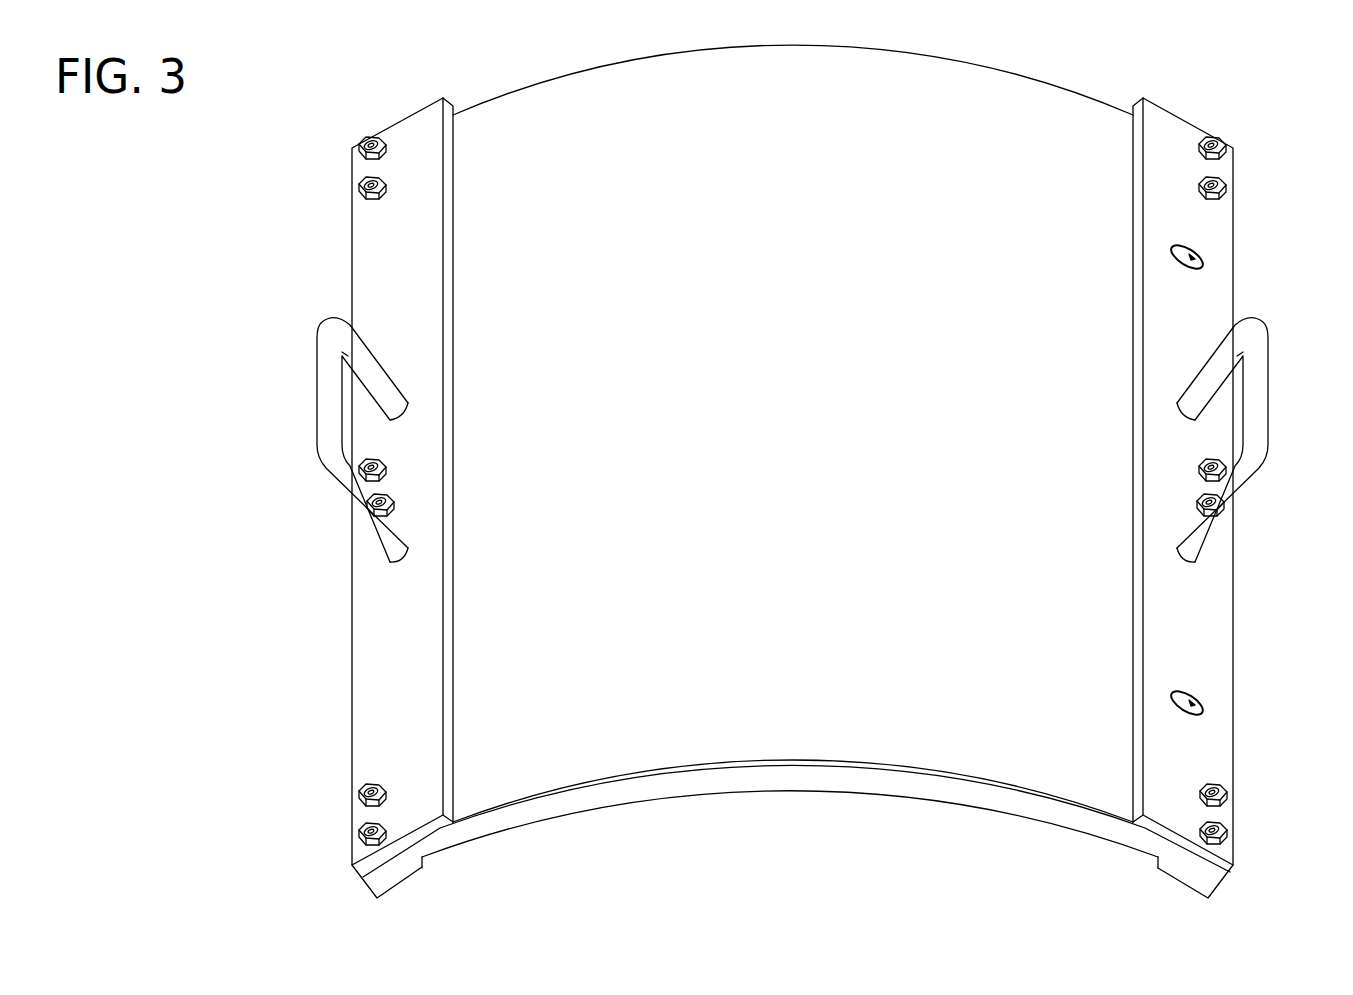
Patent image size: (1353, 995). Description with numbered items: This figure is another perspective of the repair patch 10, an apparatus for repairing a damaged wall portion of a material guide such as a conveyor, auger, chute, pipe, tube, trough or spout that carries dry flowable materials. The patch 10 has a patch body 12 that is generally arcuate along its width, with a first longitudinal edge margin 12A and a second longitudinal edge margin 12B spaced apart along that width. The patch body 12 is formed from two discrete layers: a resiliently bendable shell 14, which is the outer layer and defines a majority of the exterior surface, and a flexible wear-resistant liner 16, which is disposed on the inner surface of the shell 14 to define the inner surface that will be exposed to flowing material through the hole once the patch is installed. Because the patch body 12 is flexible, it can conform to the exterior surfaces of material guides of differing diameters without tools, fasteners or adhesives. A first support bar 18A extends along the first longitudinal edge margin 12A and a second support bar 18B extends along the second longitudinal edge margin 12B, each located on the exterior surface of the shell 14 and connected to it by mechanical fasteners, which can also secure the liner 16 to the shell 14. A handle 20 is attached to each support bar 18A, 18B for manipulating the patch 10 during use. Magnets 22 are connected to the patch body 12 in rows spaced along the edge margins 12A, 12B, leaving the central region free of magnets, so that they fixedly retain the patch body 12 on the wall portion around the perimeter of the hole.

The repair patch 10 is at (652, 915).
The patch body 12 is at (368, 898).
The first longitudinal edge margin 12A is at (1235, 625).
The second longitudinal edge margin 12B is at (352, 667).
The shell 14 is at (777, 762).
The liner 16 is at (920, 790).
The first support bar 18A is at (1173, 133).
The second support bar 18B is at (372, 250).
The handle 20 is at (1260, 392).
The magnet 22 is at (1185, 876).